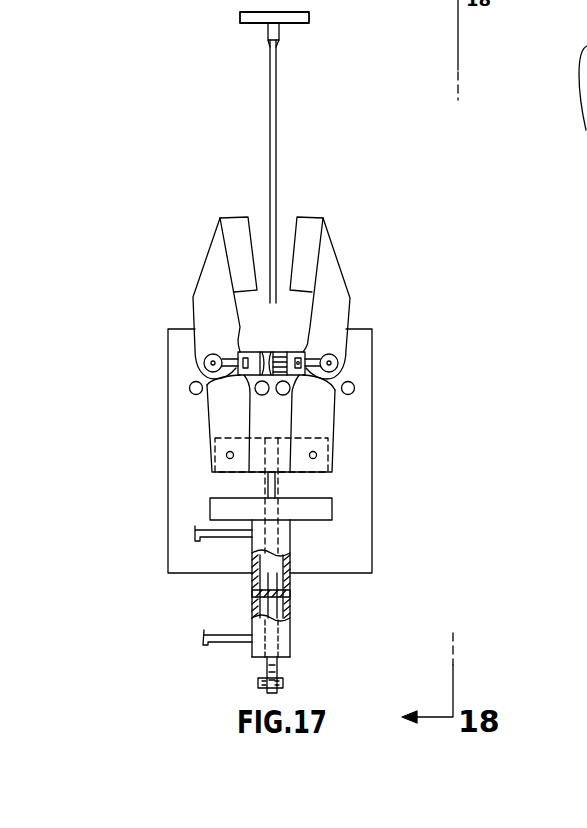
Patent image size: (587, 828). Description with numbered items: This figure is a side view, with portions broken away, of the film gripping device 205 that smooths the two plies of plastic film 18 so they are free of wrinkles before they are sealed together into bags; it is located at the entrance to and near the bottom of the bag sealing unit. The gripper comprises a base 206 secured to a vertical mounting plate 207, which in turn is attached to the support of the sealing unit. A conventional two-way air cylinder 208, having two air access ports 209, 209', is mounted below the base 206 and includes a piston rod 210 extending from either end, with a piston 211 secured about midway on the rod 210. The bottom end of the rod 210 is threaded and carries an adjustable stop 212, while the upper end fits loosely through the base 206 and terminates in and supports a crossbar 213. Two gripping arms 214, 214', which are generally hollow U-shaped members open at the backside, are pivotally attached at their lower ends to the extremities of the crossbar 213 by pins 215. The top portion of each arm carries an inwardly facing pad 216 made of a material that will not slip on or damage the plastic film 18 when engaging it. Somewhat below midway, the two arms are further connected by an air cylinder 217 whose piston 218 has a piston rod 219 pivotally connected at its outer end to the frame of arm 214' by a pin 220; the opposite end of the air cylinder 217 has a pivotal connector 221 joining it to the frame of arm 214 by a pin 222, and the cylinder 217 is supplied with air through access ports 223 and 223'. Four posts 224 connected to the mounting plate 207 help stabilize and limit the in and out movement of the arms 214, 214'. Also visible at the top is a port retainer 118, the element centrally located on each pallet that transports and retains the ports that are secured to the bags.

The film 18 is at (277, 113).
The port retainer 118 is at (281, 30).
The film gripping device 205 is at (118, 442).
The base 206 is at (334, 508).
The vertical mounting plate 207 is at (355, 553).
The two-way air cylinder 208 is at (291, 640).
The air access port 209 is at (176, 550).
The air access port 209' is at (205, 655).
The piston rod 210 is at (279, 668).
The piston 211 is at (291, 593).
The adjustable stop 212 is at (284, 684).
The crossbar 213 is at (287, 437).
The gripping arm 214 is at (180, 298).
The gripping arm 214' is at (357, 298).
The pin 215 is at (229, 457).
The pad 216 is at (232, 230).
The air cylinder 217 is at (281, 352).
The piston 218 is at (266, 352).
The piston rod 219 is at (343, 330).
The pin 220 is at (338, 362).
The pivotal connector 221 is at (205, 378).
The pin 222 is at (204, 358).
The air access port 223 is at (164, 403).
The air access port 223' is at (370, 370).
The post 224 is at (189, 388).